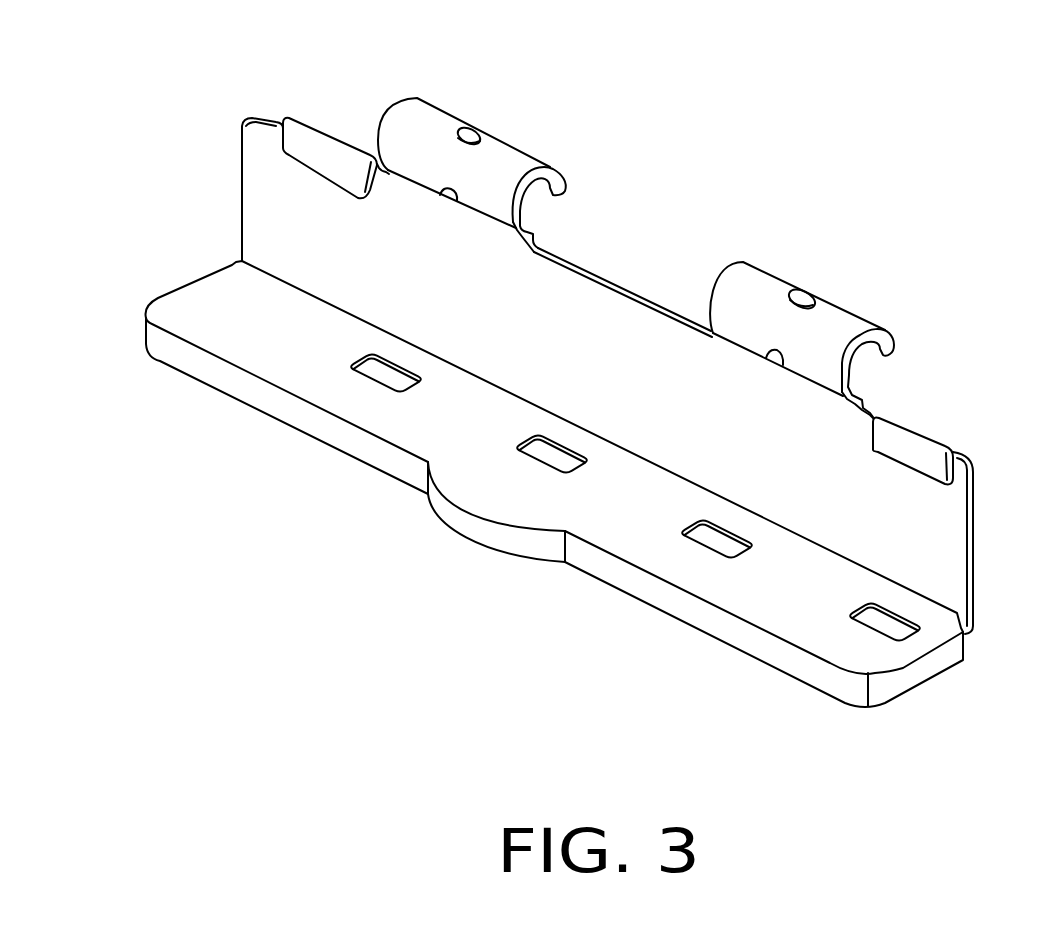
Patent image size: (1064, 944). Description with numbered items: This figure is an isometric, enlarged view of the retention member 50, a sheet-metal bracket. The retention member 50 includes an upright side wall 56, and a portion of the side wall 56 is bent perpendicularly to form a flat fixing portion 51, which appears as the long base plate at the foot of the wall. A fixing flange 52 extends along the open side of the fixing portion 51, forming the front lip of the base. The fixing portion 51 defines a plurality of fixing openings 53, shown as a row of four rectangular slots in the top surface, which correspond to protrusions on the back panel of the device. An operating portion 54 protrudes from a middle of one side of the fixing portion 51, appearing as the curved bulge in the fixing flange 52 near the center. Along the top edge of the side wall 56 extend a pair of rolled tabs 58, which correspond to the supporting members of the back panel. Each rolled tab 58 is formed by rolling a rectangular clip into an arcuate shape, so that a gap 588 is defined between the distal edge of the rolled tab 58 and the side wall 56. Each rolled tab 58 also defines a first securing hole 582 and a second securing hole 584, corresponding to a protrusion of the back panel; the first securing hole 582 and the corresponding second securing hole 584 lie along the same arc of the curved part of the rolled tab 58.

The retention member 50 is at (177, 137).
The fixing portion 51 is at (230, 317).
The fixing flange 52 is at (392, 458).
The fixing openings 53 is at (383, 373).
The operating portion 54 is at (508, 498).
The side wall 56 is at (940, 538).
The rolled tabs 58 is at (420, 118).
The first securing hole 582 is at (441, 197).
The second securing hole 584 is at (805, 293).
The gap 588 is at (867, 368).